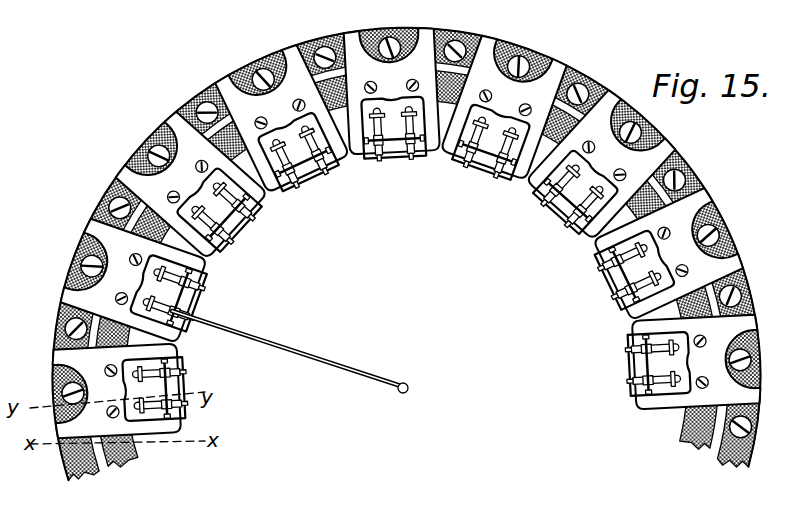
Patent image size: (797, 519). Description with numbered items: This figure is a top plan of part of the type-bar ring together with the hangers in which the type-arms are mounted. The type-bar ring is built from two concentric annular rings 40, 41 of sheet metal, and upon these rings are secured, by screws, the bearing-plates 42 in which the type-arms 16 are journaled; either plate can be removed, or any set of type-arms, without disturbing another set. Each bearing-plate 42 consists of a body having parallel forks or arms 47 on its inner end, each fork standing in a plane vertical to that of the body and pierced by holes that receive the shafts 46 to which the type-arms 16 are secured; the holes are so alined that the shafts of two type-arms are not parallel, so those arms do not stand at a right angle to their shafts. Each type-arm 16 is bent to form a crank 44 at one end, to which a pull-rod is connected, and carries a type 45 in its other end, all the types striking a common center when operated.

The type-arm 16 is at (286, 348).
The annular ring 40 is at (212, 102).
The annular ring 41 is at (232, 86).
The bearing-plate 42 is at (198, 200).
The crank 44 is at (200, 272).
The type 45 is at (405, 385).
The shaft 46 is at (183, 303).
The forks or arms 47 is at (177, 355).